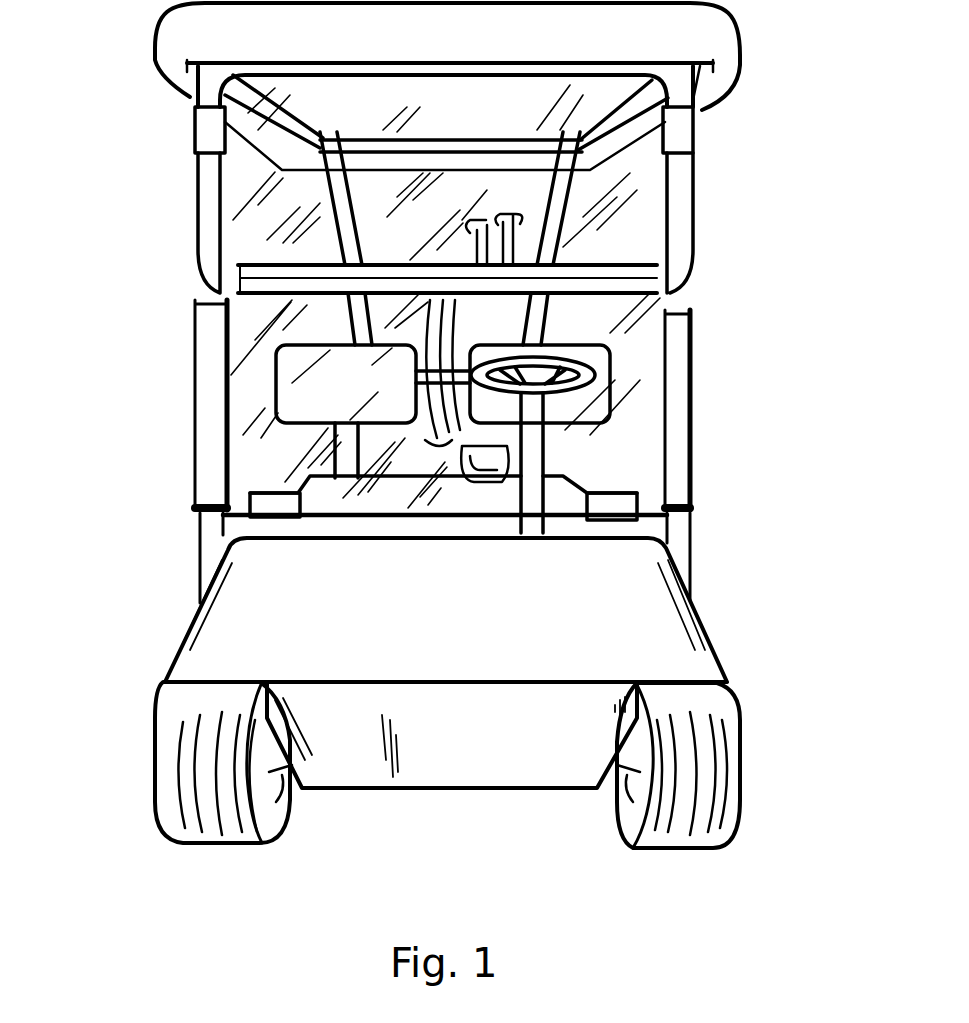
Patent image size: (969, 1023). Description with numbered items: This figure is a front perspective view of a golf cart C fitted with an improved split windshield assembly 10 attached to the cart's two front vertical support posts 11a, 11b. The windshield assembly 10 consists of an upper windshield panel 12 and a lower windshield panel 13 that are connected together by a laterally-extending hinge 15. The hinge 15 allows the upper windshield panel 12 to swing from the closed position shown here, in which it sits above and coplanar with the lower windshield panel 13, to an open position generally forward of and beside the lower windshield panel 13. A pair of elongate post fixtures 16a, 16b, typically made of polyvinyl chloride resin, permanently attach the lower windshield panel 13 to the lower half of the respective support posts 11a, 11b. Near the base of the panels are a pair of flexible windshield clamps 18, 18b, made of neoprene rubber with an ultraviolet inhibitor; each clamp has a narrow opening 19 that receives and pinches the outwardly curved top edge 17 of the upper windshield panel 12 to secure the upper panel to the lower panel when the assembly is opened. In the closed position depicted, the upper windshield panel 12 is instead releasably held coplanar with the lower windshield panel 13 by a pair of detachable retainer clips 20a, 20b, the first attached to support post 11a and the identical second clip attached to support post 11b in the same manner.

The windshield assembly 10 is at (190, 248).
The front vertical support post 11a is at (198, 520).
The front vertical support post 11b is at (680, 540).
The upper windshield panel 12 is at (650, 203).
The lower windshield panel 13 is at (640, 336).
The hinge 15 is at (200, 296).
The post fixture 16a is at (205, 378).
The post fixture 16b is at (680, 392).
The outwardly curved top edge 17 is at (707, 108).
The flexible windshield clamp 18 is at (268, 490).
The flexible windshield clamp 18b is at (618, 527).
The narrow opening 19 is at (245, 520).
The retainer clip 20a is at (192, 126).
The retainer clip 20b is at (700, 138).
The golf cart C is at (258, 626).